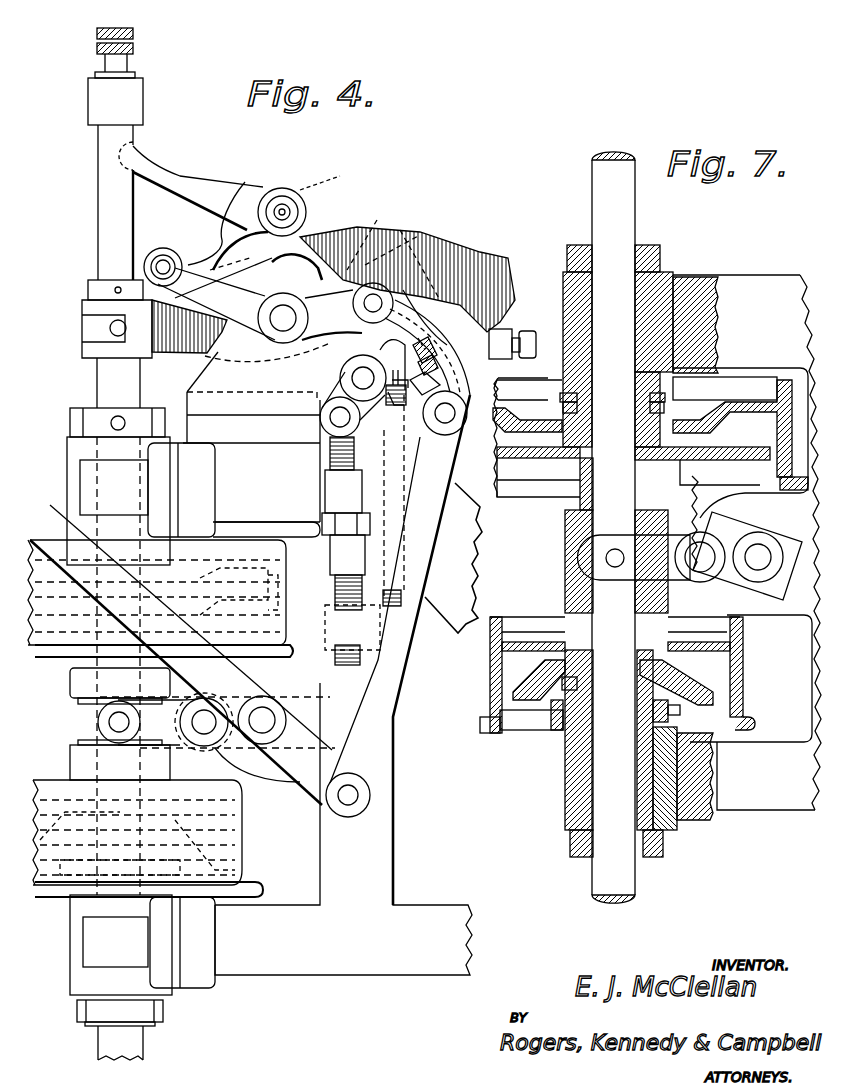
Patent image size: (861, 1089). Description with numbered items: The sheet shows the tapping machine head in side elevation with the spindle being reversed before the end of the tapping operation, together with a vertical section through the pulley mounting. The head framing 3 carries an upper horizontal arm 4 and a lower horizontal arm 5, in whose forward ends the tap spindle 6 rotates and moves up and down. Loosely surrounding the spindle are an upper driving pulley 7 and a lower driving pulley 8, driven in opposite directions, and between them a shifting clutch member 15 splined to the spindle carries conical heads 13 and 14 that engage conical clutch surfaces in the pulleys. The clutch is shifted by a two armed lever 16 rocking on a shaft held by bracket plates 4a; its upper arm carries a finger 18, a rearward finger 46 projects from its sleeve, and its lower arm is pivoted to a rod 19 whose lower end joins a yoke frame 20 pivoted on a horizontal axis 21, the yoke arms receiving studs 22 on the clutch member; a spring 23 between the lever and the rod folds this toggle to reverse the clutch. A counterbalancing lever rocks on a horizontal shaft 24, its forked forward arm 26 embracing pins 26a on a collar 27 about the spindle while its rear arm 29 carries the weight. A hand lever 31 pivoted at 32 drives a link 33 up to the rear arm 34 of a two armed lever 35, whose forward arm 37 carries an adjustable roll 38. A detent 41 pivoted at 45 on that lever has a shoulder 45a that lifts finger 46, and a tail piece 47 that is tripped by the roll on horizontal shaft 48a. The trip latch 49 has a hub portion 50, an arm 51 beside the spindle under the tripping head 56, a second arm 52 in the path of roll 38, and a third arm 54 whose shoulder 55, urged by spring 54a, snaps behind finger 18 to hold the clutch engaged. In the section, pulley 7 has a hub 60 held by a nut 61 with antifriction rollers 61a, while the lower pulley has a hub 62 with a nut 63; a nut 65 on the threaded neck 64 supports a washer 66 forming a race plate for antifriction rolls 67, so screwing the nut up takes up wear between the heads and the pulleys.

In FIG. 4, the tripping head 56 is at (115, 76).
In FIG. 4, the tap spindle 6 is at (120, 592).
In FIG. 7, the tap spindle 6 is at (613, 527).
In FIG. 4, the arm 51 is at (211, 184).
In FIG. 4, the second arm 52 is at (222, 212).
In FIG. 4, the roll 38 is at (167, 249).
In FIG. 4, the forward arm 37 is at (216, 304).
In FIG. 4, the collar 27 is at (80, 345).
In FIG. 4, the forward arm 26 is at (120, 345).
In FIG. 4, the pins or studs 26a is at (110, 327).
In FIG. 4, the nut 61 is at (92, 286).
In FIG. 7, the nut 61 is at (660, 260).
In FIG. 4, the trip latch 49 is at (299, 212).
In FIG. 4, the horizontal shaft 48a is at (287, 208).
In FIG. 4, the hub portion 50 is at (331, 180).
In FIG. 4, the two armed lever 35 is at (282, 292).
In FIG. 4, the tail piece 47 is at (297, 256).
In FIG. 4, the horizontal shaft 24 is at (283, 318).
In FIG. 4, the detent 41 is at (470, 370).
In FIG. 4, the rear arm 29 is at (492, 262).
In FIG. 4, the third arm 54 is at (383, 234).
In FIG. 4, the spring 54a is at (417, 246).
In FIG. 4, the pivot 45 is at (403, 303).
In FIG. 4, the shoulder 45a is at (445, 421).
In FIG. 4, the finger 18 is at (420, 340).
In FIG. 4, the rear arm 34 is at (439, 317).
In FIG. 4, the shoulder 55 is at (432, 360).
In FIG. 4, the finger 46 is at (378, 352).
In FIG. 4, the two armed lever 16 is at (342, 382).
In FIG. 4, the bracket plates 4a is at (273, 404).
In FIG. 4, the upper horizontal arm 4 is at (365, 457).
In FIG. 7, the upper horizontal arm 4 is at (747, 542).
In FIG. 4, the rod 19 is at (328, 458).
In FIG. 4, the spring 23 is at (392, 408).
In FIG. 4, the link 33 is at (398, 650).
In FIG. 4, the head framing 3 is at (454, 558).
In FIG. 4, the upper driving pulley 7 is at (160, 598).
In FIG. 7, the upper driving pulley 7 is at (650, 443).
In FIG. 4, the conical head 13 is at (266, 595).
In FIG. 7, the conical head 13 is at (762, 434).
In FIG. 4, the hand lever 31 is at (181, 655).
In FIG. 7, the hand lever 31 is at (747, 538).
In FIG. 4, the pivot 32 is at (268, 712).
In FIG. 7, the pivot 32 is at (765, 550).
In FIG. 4, the horizontal axis 21 is at (210, 728).
In FIG. 7, the horizontal axis 21 is at (712, 578).
In FIG. 4, the yoke frame 20 is at (217, 722).
In FIG. 7, the yoke frame 20 is at (688, 582).
In FIG. 4, the studs 22 is at (118, 732).
In FIG. 7, the studs 22 is at (615, 568).
In FIG. 4, the shifting clutch member 15 is at (72, 722).
In FIG. 7, the shifting clutch member 15 is at (565, 556).
In FIG. 4, the lower driving pulley 8 is at (148, 838).
In FIG. 7, the lower driving pulley 8 is at (742, 652).
In FIG. 4, the conical head 14 is at (220, 822).
In FIG. 7, the conical head 14 is at (725, 662).
In FIG. 4, the lower horizontal arm 5 is at (269, 716).
In FIG. 7, the lower horizontal arm 5 is at (746, 776).
In FIG. 4, the nut 63 is at (165, 1010).
In FIG. 7, the nut 63 is at (664, 846).
In FIG. 7, the hub 60 is at (660, 292).
In FIG. 7, the antifriction rollers 61a is at (666, 402).
In FIG. 7, the hub 62 is at (565, 768).
In FIG. 7, the threaded neck 64 is at (540, 745).
In FIG. 7, the nut 65 is at (555, 700).
In FIG. 7, the washer 66 is at (668, 710).
In FIG. 7, the antifriction rolls 67 is at (490, 733).